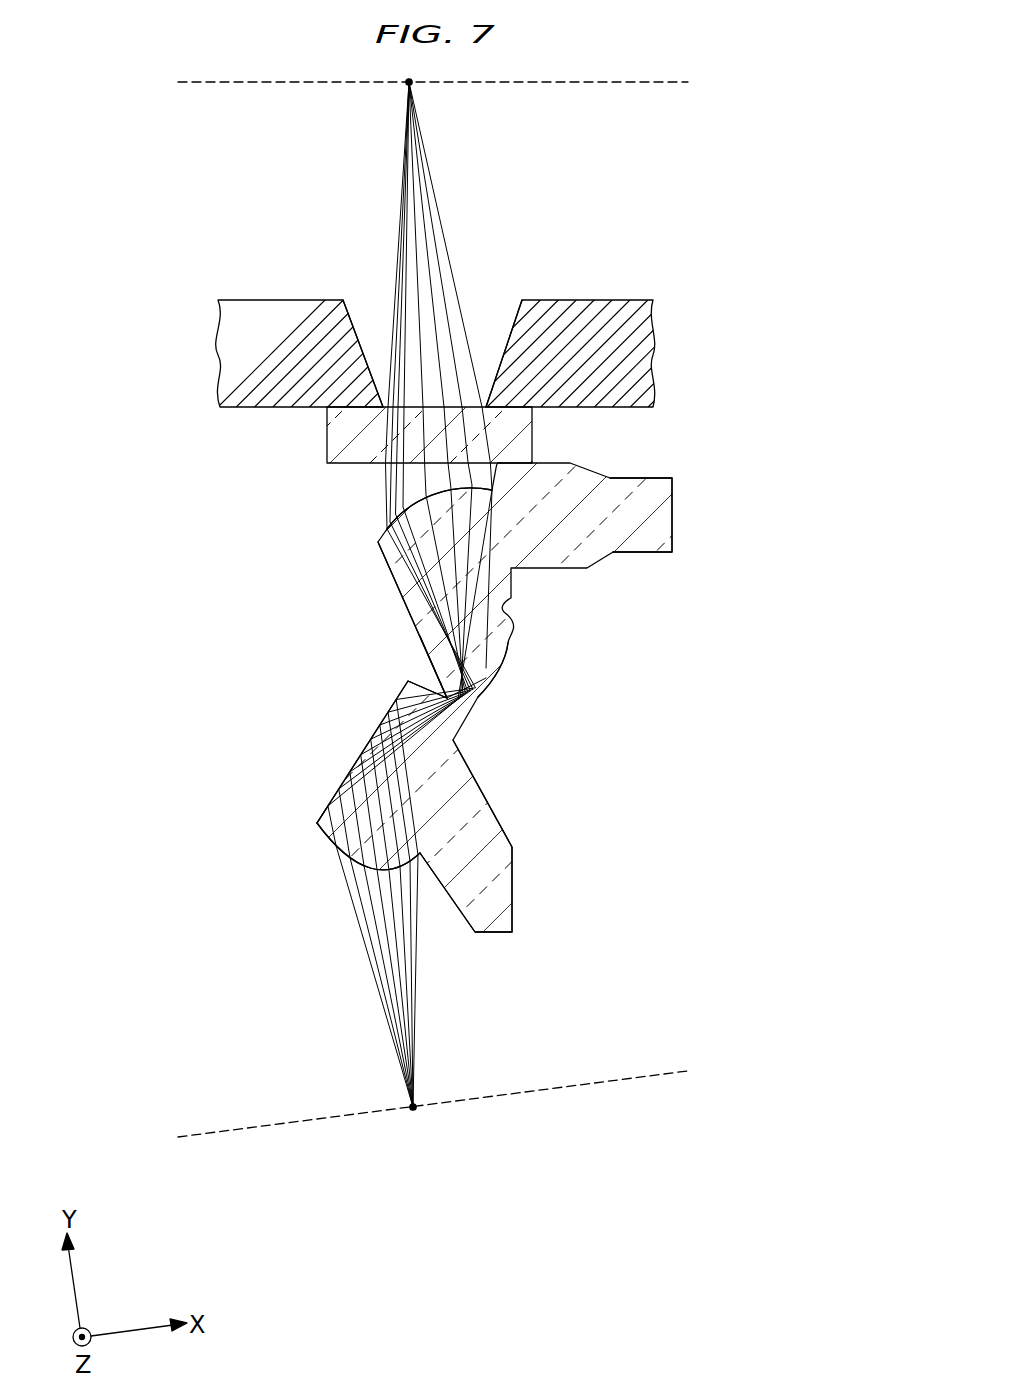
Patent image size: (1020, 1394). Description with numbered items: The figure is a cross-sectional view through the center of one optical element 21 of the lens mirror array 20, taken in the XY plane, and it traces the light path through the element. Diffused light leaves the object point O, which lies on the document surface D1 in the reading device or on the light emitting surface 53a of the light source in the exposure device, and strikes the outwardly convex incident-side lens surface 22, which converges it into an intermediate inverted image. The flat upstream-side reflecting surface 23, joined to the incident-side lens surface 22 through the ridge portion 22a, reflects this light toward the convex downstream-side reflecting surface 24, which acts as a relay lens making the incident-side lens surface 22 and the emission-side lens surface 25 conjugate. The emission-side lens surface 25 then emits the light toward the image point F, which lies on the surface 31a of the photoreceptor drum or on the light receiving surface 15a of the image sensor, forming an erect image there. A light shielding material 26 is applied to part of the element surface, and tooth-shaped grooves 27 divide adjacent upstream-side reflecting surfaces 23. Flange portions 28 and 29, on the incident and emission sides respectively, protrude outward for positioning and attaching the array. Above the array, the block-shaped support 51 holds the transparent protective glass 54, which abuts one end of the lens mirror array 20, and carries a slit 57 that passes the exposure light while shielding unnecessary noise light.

The light receiving surface 15a is at (433, 119).
The surface of the photoreceptor drum 31a is at (240, 85).
The image point F is at (414, 85).
The support 51 is at (600, 303).
The slit 57 is at (382, 403).
The protective glass 54 is at (515, 433).
The lens mirror array 20 is at (510, 680).
The optical element 21 is at (703, 516).
The flange portion on the light emission side 29 is at (660, 487).
The emission-side lens surface 25 is at (381, 532).
The light shielding material 26 is at (396, 583).
The groove 27 is at (420, 670).
The downstream-side reflecting surface 24 is at (487, 687).
The upstream-side reflecting surface 23 is at (353, 761).
The ridge portion 22a is at (316, 823).
The incident-side lens surface 22 is at (339, 860).
The flange portion on the incident side 28 is at (504, 883).
The document surface D1 is at (433, 1078).
The light emitting surface 53a is at (616, 1077).
The object point O is at (416, 1103).